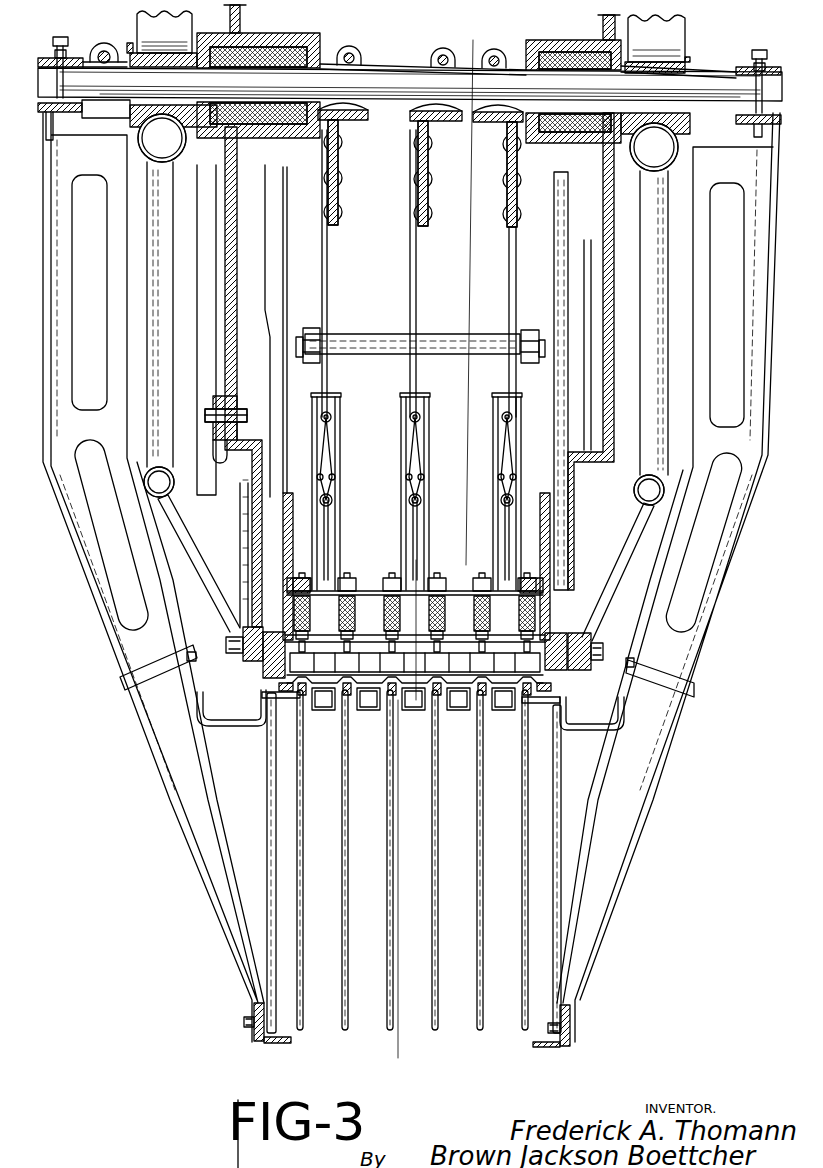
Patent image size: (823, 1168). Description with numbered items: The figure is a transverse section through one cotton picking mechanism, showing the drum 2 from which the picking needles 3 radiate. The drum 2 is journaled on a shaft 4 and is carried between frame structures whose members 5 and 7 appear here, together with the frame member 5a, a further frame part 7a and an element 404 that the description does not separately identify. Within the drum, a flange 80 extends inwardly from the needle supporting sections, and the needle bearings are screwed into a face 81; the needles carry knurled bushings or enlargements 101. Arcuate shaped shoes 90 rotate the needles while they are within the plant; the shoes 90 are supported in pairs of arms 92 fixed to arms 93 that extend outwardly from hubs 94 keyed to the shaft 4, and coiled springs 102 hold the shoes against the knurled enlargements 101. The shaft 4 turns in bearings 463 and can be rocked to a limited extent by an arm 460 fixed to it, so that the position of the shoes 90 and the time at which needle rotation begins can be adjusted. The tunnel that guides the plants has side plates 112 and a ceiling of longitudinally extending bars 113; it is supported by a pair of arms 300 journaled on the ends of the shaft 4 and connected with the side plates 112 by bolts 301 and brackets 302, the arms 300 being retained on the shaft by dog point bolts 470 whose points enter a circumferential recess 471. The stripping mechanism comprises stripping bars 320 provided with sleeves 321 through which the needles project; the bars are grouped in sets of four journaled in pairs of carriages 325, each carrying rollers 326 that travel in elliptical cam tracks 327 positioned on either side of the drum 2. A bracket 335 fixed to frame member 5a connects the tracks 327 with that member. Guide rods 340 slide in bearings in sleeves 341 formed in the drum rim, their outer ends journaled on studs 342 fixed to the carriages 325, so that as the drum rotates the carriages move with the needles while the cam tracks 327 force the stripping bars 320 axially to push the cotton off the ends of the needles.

The drum 2 is at (473, 40).
The picking needles 3 is at (437, 1013).
The shaft 4 is at (774, 89).
The frame member 5 is at (176, 158).
The frame member 5a is at (645, 493).
The frame member 7 is at (511, 472).
The side tube 7a is at (161, 281).
The flange 80 is at (402, 583).
The face 81 is at (438, 700).
The arcuate shaped shoes 90 is at (398, 515).
The arms 92 is at (329, 300).
The arms 93 is at (340, 163).
The hubs 94 is at (360, 66).
The knurled bushings 101 is at (363, 576).
The coiled springs 102 is at (500, 517).
The side plates 112 is at (270, 860).
The longitudinally extending bars 113 is at (410, 713).
The arms 300 is at (100, 612).
The bolts 301 is at (250, 1019).
The brackets 302 is at (218, 725).
The stripping bars 320 is at (276, 695).
The sleeves 321 is at (347, 690).
The carriages 325 is at (257, 665).
The rollers 326 is at (263, 660).
The cam tracks 327 is at (243, 621).
The bracket 335 is at (200, 553).
The guide rods 340 is at (278, 364).
The sleeves 341 is at (294, 521).
The studs 342 is at (206, 723).
The clamp bracket 404 is at (212, 429).
The arm 460 is at (106, 50).
The bearings 463 is at (163, 55).
The dog point bolts 470 is at (62, 35).
The circumferential recess 471 is at (55, 88).